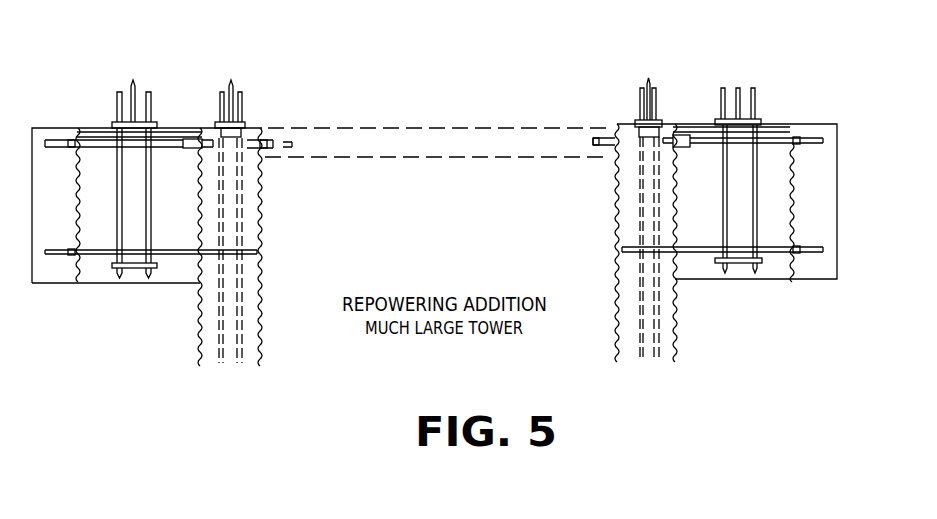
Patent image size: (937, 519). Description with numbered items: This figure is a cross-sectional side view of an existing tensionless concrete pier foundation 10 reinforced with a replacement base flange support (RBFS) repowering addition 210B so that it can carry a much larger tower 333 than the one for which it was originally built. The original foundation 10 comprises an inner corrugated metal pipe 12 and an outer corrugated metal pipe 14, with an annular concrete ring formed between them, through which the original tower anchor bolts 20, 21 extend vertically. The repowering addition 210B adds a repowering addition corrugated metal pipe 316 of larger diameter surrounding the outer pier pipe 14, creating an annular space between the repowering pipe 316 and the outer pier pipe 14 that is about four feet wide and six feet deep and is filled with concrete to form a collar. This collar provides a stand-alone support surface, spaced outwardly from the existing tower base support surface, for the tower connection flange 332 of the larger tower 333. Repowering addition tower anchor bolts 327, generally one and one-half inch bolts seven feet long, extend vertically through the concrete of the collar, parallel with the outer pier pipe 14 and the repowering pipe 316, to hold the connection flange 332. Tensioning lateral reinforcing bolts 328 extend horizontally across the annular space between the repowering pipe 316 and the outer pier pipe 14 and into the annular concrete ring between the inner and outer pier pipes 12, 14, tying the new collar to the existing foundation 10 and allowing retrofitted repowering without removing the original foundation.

The concrete pier foundation 10 is at (362, 124).
The inner corrugated metal pipe 12 is at (617, 298).
The outer corrugated metal pipe 14 is at (675, 352).
The tower anchor bolt 20 is at (660, 330).
The tower anchor bolt 21 is at (642, 185).
The replacement base flange support repowering addition 210B is at (735, 207).
The repowering addition corrugated metal pipe 316 is at (793, 192).
The repowering addition tower anchor bolts 327 is at (758, 178).
The tensioning lateral reinforcing bolts 328 is at (818, 143).
The tower connection flange 332 is at (760, 118).
The much larger tower 333 is at (739, 86).